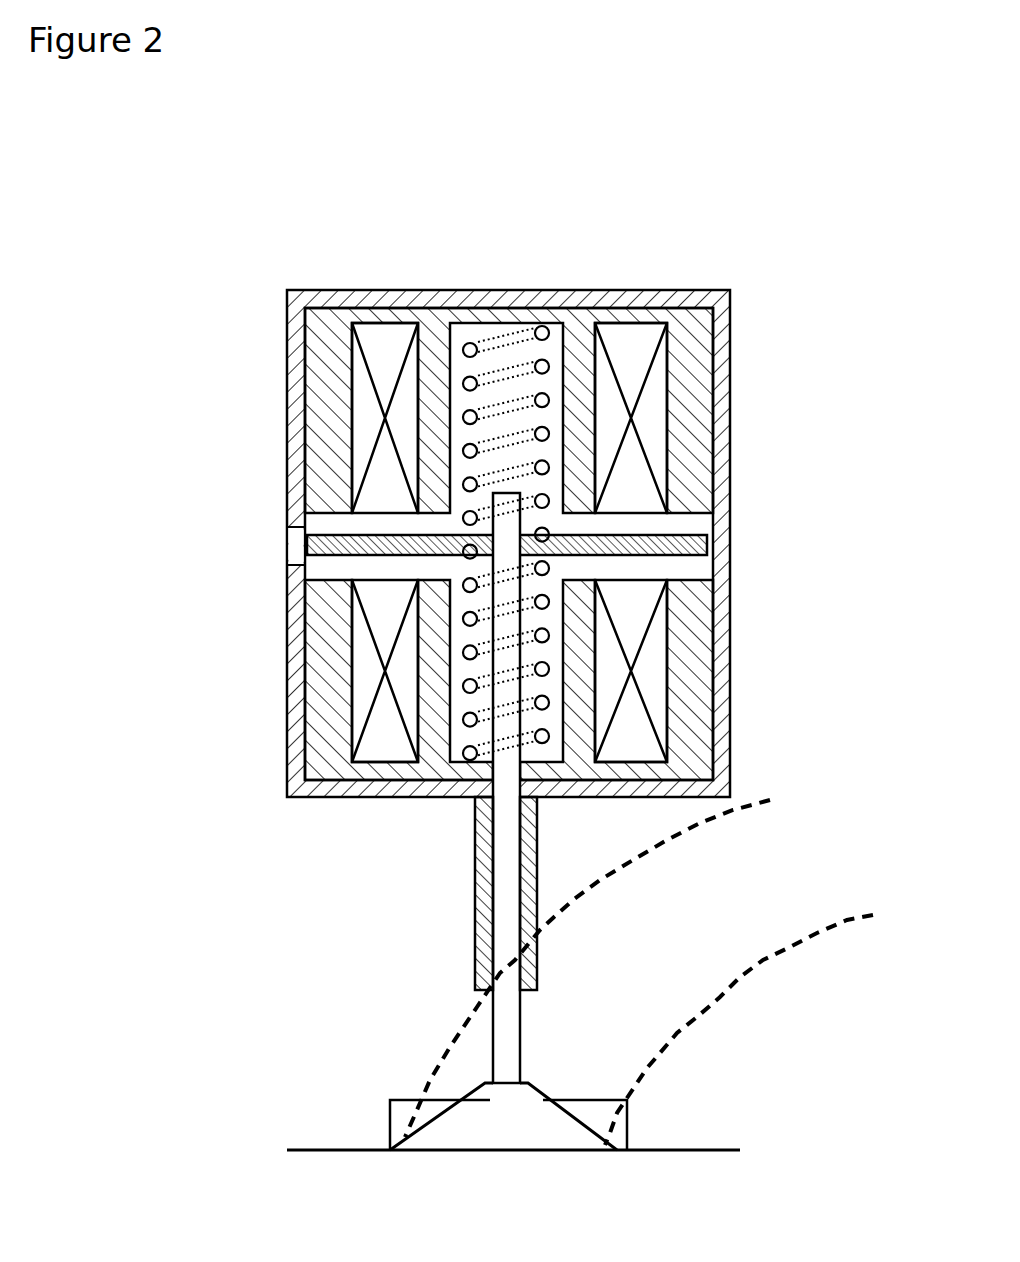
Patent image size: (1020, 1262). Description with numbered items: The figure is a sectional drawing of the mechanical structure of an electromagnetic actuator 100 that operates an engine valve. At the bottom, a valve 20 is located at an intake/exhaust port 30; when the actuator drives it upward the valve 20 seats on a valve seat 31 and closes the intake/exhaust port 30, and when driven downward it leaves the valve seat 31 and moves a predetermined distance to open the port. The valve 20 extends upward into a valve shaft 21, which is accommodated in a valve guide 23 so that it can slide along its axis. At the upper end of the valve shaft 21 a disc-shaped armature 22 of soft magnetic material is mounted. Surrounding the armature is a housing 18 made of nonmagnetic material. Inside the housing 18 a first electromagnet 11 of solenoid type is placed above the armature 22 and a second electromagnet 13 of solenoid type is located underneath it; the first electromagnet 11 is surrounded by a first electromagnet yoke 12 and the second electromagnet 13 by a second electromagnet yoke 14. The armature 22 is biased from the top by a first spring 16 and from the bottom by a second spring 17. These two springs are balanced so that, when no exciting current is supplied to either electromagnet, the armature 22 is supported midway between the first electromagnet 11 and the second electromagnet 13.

The electromagnetic actuator 100 is at (762, 259).
The first electromagnet 11 is at (650, 412).
The first electromagnet yoke 12 is at (597, 410).
The second electromagnet 13 is at (650, 670).
The second electromagnet yoke 14 is at (597, 680).
The first spring 16 is at (503, 362).
The second spring 17 is at (420, 797).
The housing 18 is at (288, 700).
The valve 20 is at (503, 1108).
The valve shaft 21 is at (503, 908).
The armature 22 is at (297, 530).
The valve guide 23 is at (535, 862).
The intake/exhaust port 30 is at (687, 968).
The valve seat 31 is at (392, 1097).